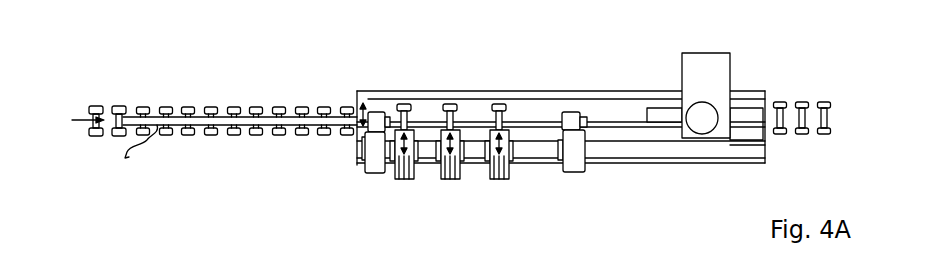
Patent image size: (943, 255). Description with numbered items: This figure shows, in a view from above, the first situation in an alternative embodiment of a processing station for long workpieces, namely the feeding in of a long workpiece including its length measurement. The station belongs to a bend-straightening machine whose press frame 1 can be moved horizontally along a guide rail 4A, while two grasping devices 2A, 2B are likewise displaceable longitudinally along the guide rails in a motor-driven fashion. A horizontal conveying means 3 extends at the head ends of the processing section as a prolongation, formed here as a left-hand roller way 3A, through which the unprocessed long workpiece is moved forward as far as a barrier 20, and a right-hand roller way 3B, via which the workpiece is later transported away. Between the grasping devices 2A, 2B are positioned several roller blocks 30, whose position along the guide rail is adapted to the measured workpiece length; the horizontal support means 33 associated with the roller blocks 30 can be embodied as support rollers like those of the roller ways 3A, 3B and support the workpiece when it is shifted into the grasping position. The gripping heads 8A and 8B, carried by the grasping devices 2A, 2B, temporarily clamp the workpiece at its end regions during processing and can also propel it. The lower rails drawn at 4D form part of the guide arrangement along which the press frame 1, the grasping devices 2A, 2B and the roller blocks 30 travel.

The press frame 1 is at (730, 68).
The grasping device 2A is at (375, 175).
The grasping device 2B is at (575, 172).
The horizontal conveying means 3 is at (228, 144).
The roller way 3A is at (189, 106).
The roller way 3B is at (805, 113).
The guide rail 4A is at (654, 72).
The conveyor rails 4D is at (630, 171).
The gripping head 8A is at (389, 118).
The gripping head 8B is at (584, 118).
The barrier 20 is at (358, 104).
The roller block 30 is at (500, 180).
The horizontal support means 33 is at (500, 104).